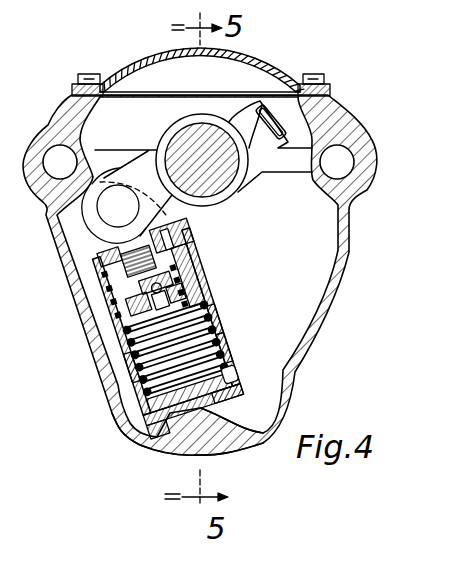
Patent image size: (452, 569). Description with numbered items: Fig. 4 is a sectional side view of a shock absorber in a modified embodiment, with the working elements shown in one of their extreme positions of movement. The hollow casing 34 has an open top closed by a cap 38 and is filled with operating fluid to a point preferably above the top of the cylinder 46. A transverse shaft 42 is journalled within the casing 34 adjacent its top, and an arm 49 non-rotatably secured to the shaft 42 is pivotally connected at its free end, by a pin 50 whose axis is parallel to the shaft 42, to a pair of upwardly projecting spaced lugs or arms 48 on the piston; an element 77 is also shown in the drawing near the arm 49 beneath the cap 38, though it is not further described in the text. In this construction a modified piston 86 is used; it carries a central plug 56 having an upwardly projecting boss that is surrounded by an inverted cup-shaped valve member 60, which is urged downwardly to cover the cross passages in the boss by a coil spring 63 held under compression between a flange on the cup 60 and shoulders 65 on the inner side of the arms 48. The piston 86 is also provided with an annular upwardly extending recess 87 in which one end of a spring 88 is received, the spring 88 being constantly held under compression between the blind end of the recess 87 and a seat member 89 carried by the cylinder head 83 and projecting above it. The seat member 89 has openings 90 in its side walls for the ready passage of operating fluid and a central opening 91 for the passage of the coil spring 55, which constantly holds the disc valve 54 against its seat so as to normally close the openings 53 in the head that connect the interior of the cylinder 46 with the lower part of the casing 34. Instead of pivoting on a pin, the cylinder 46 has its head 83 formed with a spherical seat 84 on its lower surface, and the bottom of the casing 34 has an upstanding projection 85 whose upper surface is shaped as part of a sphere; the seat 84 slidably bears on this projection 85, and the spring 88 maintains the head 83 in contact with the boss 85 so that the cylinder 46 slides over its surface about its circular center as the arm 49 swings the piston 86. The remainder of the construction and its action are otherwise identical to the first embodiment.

The casing 34 is at (342, 279).
The cap 38 is at (277, 66).
The slot 77 is at (269, 107).
The arm 49 is at (143, 162).
The transverse shaft 42 is at (232, 176).
The pin 50 is at (114, 205).
The coil spring 63 is at (131, 262).
The shoulders 65 is at (115, 251).
The lugs or arms 48 is at (94, 254).
The piston 86 is at (182, 240).
The annular recess 87 is at (192, 255).
The cup-shaped valve member 60 is at (194, 275).
The plug 56 is at (120, 300).
The spring 88 is at (192, 322).
The cylinder 46 is at (215, 322).
The central opening 91 is at (220, 345).
The coil spring 55 is at (122, 367).
The seat member 89 is at (209, 372).
The openings 90 is at (229, 368).
The disc valve 54 is at (149, 397).
The head 83 is at (232, 388).
The openings 53 is at (128, 438).
The spherical seat 84 is at (222, 418).
The upstanding projection 85 is at (187, 443).